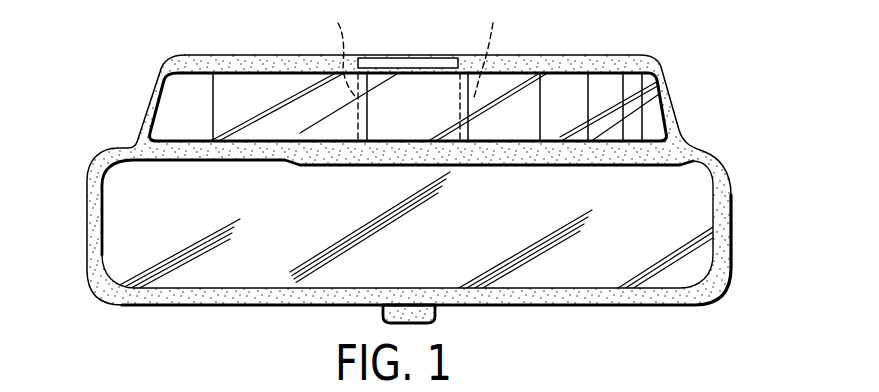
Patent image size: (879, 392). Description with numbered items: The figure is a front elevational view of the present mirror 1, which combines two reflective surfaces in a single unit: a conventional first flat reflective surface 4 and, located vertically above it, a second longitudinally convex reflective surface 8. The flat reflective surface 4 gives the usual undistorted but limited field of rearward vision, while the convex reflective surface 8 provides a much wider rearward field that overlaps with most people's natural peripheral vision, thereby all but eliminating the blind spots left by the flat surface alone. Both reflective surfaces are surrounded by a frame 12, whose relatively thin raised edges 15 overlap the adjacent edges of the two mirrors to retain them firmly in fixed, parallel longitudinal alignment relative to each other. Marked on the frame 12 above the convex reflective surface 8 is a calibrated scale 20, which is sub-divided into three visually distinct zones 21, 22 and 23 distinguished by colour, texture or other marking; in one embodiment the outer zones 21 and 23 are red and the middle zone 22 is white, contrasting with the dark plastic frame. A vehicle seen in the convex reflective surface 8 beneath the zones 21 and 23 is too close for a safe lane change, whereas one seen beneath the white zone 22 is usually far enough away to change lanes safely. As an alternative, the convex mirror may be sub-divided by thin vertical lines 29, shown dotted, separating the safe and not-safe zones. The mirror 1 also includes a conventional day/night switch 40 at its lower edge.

The mirror 1 is at (742, 206).
The first flat reflective surface 4 is at (677, 270).
The second longitudinally convex reflective surface 8 is at (602, 83).
The frame 12 is at (120, 144).
The raised edges 15 is at (255, 158).
The calibrated scale 20 is at (457, 50).
The zone 21 is at (235, 68).
The zone 22 is at (380, 62).
The zone 23 is at (538, 58).
The thin vertical lines 29 is at (408, 70).
The day/night switch 40 is at (438, 314).